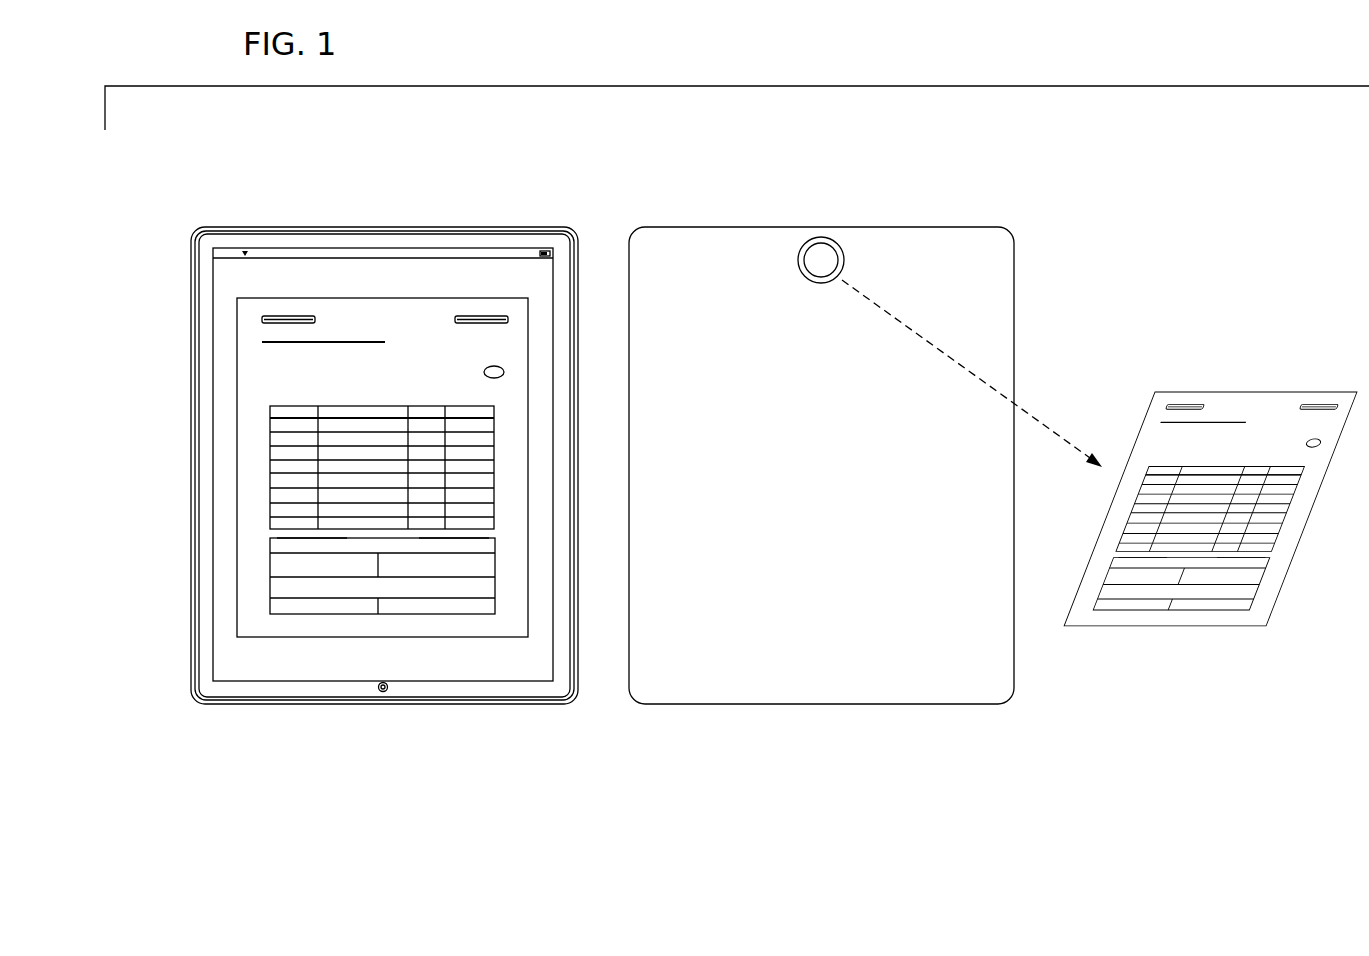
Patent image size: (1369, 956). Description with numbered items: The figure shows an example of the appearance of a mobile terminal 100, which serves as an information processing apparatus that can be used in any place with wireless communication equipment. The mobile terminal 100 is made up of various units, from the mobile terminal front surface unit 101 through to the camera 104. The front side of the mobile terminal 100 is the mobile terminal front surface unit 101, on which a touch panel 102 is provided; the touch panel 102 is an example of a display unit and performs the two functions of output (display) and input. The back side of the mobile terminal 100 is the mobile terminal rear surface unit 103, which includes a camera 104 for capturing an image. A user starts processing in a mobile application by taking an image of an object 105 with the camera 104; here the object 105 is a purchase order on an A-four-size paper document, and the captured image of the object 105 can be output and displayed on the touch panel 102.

The mobile terminal 100 is at (277, 196).
The mobile terminal front surface unit 101 is at (497, 228).
The touch panel 102 is at (218, 381).
The mobile terminal rear surface unit 103 is at (917, 227).
The camera 104 is at (838, 243).
The object 105 is at (1283, 391).